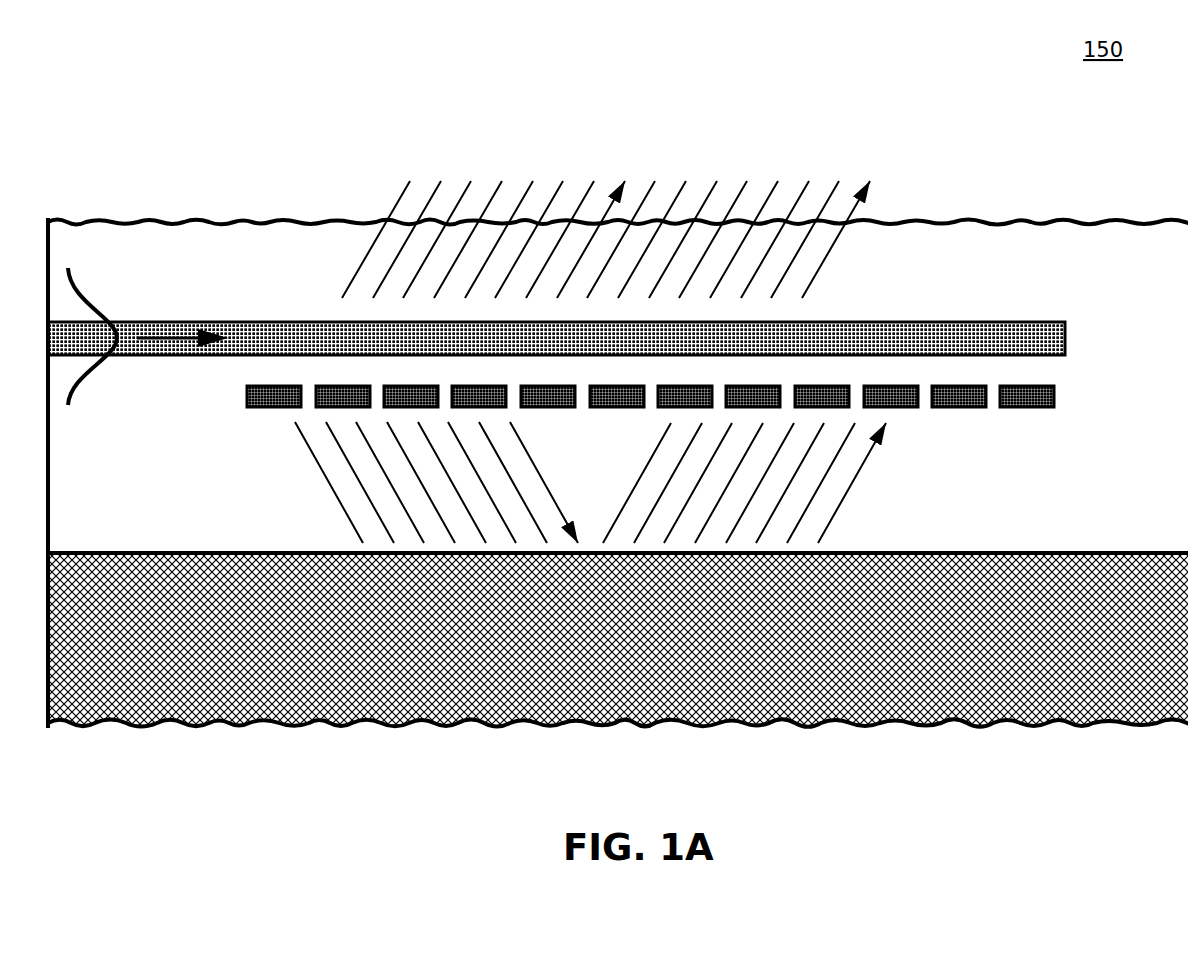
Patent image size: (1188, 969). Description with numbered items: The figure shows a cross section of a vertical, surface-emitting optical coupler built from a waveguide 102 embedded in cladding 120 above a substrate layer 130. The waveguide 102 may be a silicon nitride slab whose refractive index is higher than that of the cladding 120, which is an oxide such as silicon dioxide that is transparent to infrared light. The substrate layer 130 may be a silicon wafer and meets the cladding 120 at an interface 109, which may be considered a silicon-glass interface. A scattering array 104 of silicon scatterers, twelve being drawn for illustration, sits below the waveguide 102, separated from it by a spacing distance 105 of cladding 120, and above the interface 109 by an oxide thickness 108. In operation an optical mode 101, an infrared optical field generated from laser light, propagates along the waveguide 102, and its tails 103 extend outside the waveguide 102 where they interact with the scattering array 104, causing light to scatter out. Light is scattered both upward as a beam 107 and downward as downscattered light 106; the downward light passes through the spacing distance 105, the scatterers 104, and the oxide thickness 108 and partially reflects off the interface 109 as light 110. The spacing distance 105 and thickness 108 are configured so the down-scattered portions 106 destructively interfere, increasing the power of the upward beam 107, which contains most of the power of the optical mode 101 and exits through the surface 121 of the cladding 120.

The optical mode 101 is at (98, 312).
The waveguide 102 is at (1017, 322).
The tails 103 is at (88, 405).
The scattering array 104 is at (246, 408).
The spacing distance 105 is at (1071, 356).
The downscattered light 106 is at (332, 519).
The light beam 107 is at (845, 256).
The oxide thickness 108 is at (1060, 407).
The interface 109 is at (115, 553).
The reflected light 110 is at (860, 492).
The cladding 120 is at (618, 473).
The surface 121 is at (306, 220).
The substrate layer 130 is at (614, 651).